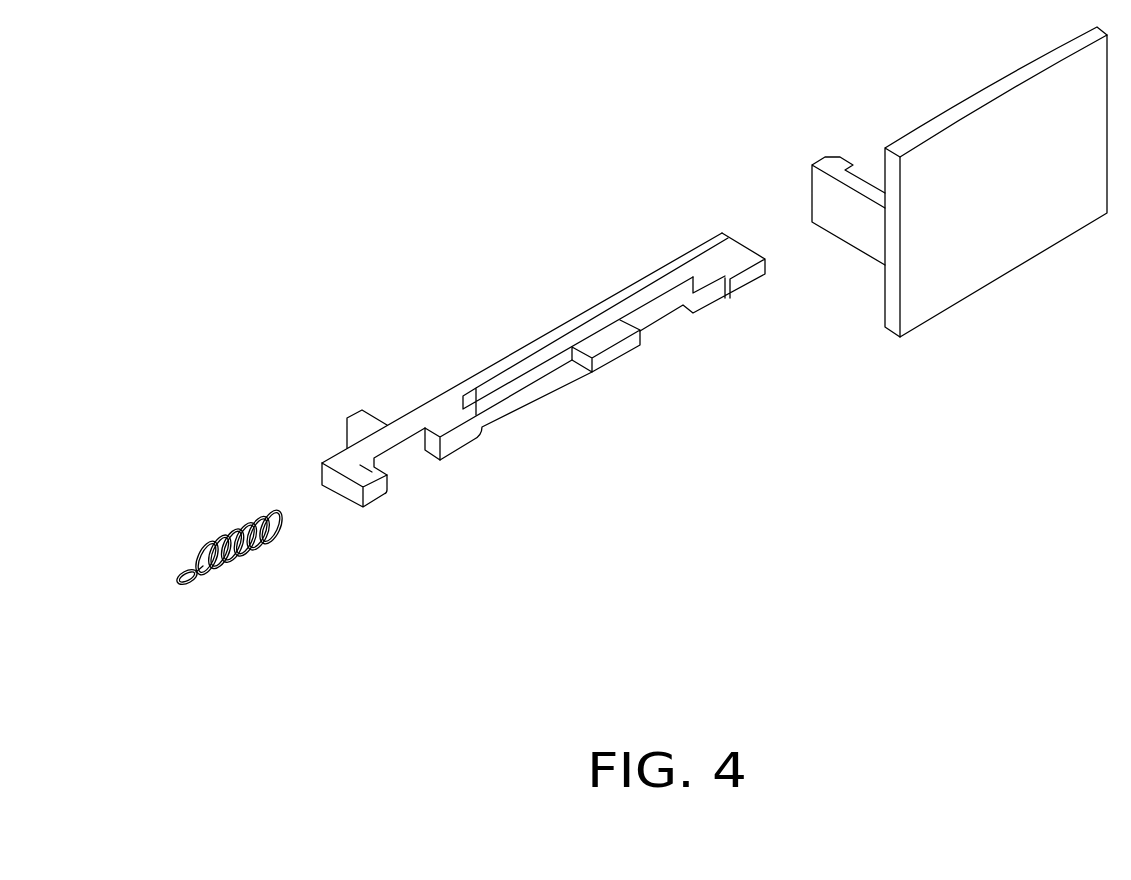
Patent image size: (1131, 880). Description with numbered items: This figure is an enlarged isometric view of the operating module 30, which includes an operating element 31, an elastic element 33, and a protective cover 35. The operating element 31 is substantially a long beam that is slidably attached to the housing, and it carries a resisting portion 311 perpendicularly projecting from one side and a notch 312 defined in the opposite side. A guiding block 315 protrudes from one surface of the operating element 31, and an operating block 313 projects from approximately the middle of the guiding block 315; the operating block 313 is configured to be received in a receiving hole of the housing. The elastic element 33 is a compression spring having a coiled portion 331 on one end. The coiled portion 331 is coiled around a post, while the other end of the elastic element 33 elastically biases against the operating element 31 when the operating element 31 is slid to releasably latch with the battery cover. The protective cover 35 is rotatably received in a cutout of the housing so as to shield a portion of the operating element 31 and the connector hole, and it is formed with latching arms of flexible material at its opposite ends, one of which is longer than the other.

The operating module 30 is at (407, 124).
The operating element 31 is at (457, 410).
The resisting portion 311 is at (360, 413).
The notch 312 is at (413, 472).
The operating block 313 is at (613, 353).
The guiding block 315 is at (487, 389).
The elastic element 33 is at (266, 548).
The coiled portion 331 is at (198, 586).
The protective cover 35 is at (985, 219).